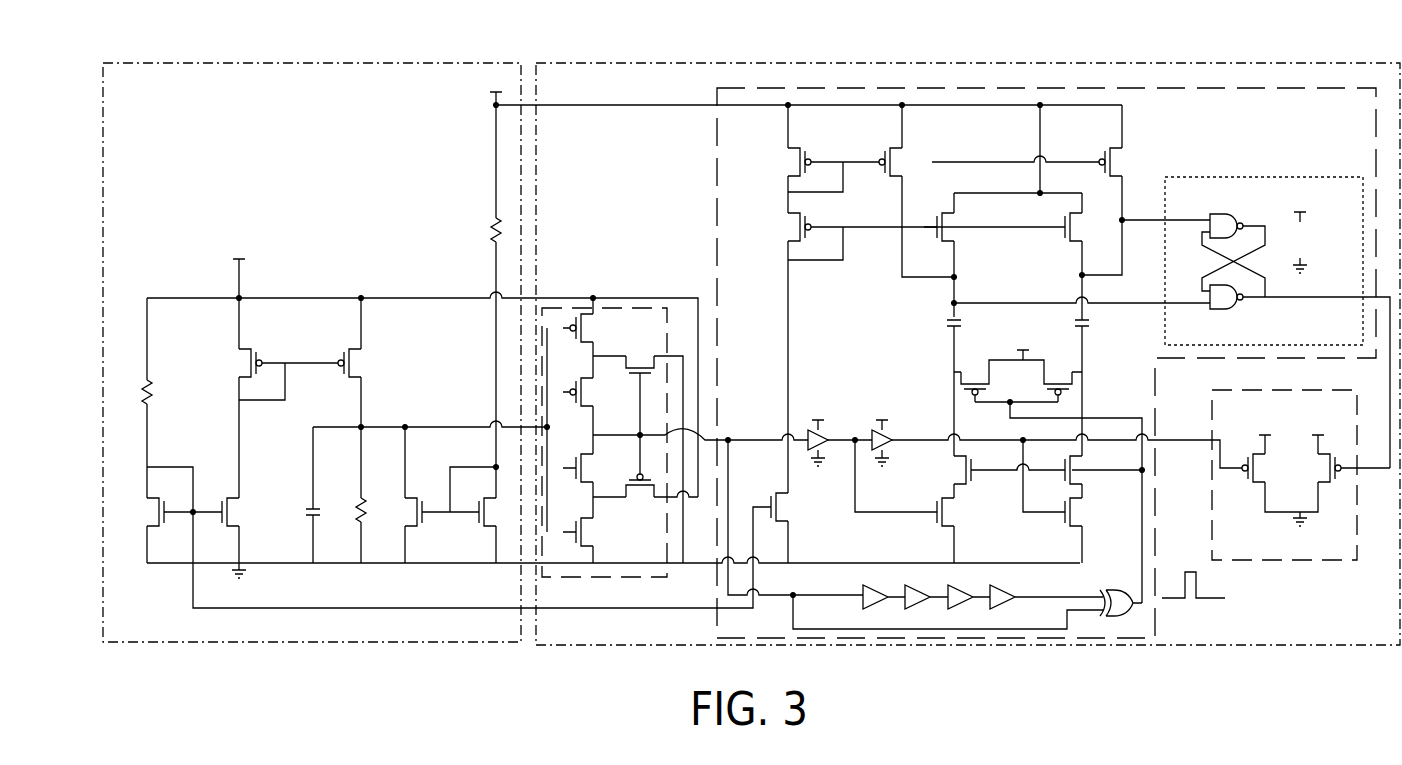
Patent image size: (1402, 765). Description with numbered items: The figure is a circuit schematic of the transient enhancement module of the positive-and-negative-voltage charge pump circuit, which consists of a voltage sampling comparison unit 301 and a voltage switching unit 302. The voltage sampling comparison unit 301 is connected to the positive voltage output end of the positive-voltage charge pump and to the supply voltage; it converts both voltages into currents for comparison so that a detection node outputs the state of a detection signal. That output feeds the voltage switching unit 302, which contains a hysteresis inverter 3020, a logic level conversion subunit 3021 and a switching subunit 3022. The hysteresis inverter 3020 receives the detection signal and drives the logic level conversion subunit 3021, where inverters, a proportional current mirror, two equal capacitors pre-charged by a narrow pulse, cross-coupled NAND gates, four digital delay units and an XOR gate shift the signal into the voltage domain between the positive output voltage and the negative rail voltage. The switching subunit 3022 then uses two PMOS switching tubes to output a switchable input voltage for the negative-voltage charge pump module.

The voltage sampling comparison unit 301 is at (100, 413).
The voltage switching unit 302 is at (948, 359).
The hysteresis inverter 3020 is at (630, 308).
The logic level conversion subunit 3021 is at (1198, 88).
The switching subunit 3022 is at (1280, 390).